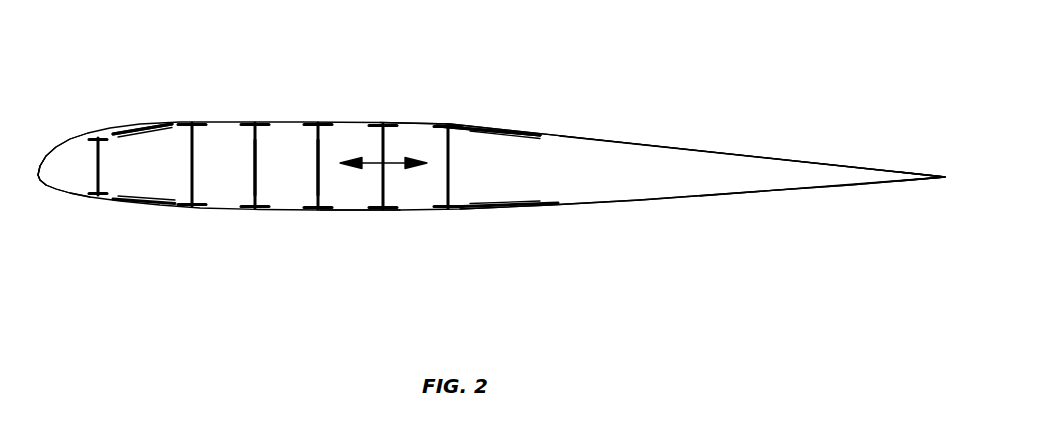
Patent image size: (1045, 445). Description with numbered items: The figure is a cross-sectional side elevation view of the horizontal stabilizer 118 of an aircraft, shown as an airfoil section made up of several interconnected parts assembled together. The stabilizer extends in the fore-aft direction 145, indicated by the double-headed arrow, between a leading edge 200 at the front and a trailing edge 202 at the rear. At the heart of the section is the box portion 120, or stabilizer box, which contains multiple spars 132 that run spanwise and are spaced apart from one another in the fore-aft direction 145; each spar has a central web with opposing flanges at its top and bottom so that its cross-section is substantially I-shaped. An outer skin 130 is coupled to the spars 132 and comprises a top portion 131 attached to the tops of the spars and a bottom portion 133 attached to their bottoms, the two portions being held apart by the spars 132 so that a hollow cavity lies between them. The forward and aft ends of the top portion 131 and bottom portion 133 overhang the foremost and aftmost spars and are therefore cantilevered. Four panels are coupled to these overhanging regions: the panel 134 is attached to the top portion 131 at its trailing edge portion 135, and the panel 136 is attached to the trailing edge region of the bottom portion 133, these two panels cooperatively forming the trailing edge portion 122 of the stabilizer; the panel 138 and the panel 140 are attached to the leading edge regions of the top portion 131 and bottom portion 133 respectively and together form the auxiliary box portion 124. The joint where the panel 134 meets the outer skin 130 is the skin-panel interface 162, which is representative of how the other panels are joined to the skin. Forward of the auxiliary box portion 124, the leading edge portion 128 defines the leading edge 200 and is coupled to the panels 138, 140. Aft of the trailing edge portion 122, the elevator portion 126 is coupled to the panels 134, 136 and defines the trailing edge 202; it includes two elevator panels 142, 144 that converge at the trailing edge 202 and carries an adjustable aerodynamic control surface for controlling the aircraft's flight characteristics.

The horizontal stabilizer 118 is at (429, 61).
The box portion 120 is at (367, 109).
The trailing edge portion 122 is at (511, 126).
The auxiliary box portion 124 is at (138, 121).
The elevator portion 126 is at (642, 138).
The leading edge portion 128 is at (61, 136).
The outer skin 130 is at (346, 115).
The top portion 131 is at (415, 122).
The spars 132 is at (312, 175).
The bottom portion 133 is at (342, 212).
The panel 134 is at (540, 126).
The trailing edge portion 135 is at (452, 127).
The panel 136 is at (514, 219).
The panel 138 is at (156, 120).
The panel 140 is at (158, 210).
The elevator panel 142 is at (688, 143).
The elevator panel 144 is at (667, 202).
The fore-aft direction 145 is at (393, 165).
The skin-panel interface 162 is at (453, 118).
The leading edge 200 is at (38, 178).
The trailing edge 202 is at (948, 174).